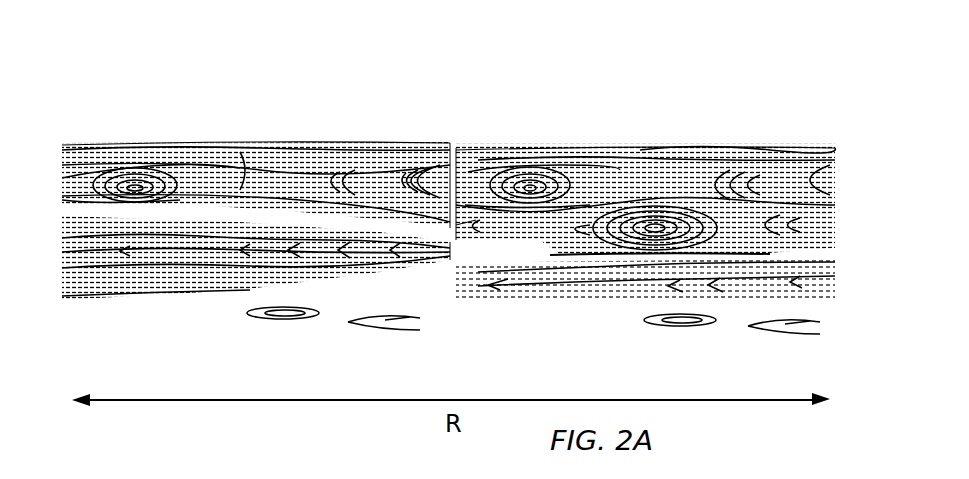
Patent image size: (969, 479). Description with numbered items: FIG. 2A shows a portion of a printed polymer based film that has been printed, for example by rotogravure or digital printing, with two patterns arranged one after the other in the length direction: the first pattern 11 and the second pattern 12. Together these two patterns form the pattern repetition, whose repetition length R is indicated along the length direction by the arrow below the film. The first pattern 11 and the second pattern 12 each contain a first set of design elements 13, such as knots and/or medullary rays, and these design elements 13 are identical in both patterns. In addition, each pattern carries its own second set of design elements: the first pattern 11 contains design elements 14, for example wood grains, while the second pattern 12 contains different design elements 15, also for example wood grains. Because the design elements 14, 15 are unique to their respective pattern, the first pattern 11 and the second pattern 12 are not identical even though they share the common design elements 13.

The first pattern 11 is at (184, 116).
The second pattern 12 is at (688, 109).
The first set of design elements 13 is at (98, 168).
The design elements of the first pattern 14 is at (272, 146).
The design elements of the second pattern 15 is at (587, 140).